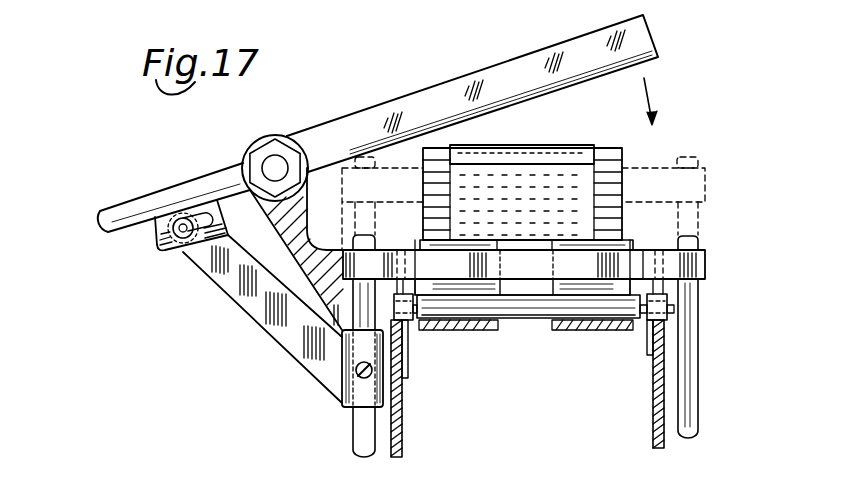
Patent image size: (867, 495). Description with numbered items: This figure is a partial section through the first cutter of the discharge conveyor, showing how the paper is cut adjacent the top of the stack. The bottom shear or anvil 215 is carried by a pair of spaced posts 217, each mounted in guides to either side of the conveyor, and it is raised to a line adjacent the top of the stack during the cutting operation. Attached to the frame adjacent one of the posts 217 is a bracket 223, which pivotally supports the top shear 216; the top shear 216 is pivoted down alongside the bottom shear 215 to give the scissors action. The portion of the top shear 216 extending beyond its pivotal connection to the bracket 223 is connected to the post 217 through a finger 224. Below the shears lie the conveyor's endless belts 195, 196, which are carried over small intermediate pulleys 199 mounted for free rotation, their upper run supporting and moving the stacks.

The top shear 216 is at (461, 86).
The bottom shear or anvil 215 is at (657, 166).
The bracket 223 is at (301, 262).
The finger 224 is at (281, 314).
The post 217 is at (358, 423).
The endless belt 195 is at (455, 338).
The endless belt 196 is at (606, 330).
The intermediate pulley 199 is at (527, 300).